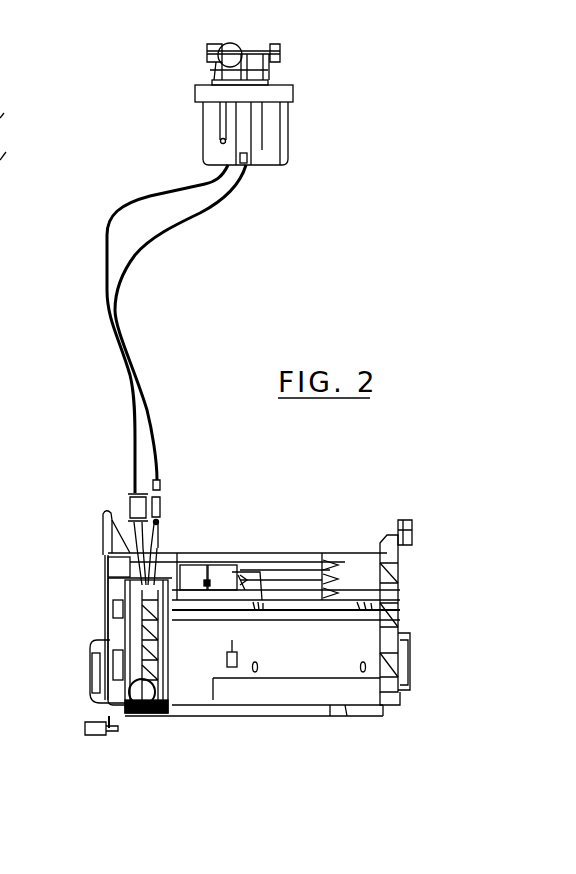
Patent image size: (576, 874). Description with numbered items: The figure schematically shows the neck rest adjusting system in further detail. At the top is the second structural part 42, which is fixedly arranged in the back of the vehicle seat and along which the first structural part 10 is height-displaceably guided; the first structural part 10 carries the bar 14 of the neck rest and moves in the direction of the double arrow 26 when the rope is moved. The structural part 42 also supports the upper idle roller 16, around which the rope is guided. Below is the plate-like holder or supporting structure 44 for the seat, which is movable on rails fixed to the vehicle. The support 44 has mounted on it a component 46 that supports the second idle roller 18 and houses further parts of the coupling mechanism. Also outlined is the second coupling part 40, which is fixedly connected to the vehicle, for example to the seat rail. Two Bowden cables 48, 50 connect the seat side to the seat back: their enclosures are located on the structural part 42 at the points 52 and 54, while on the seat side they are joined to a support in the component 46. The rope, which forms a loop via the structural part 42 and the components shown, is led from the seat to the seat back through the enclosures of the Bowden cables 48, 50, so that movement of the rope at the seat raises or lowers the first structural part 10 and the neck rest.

The first structural part 10 is at (300, 88).
The bar 14 is at (17, 114).
The idle roller 16 is at (230, 50).
The second idle roller 18 is at (142, 704).
The double arrow 26 is at (19, 157).
The second coupling part 40 is at (84, 727).
The second structural part 42 is at (293, 136).
The supporting structure 44 is at (230, 550).
The component 46 is at (118, 644).
The Bowden cable 48 is at (143, 193).
The Bowden cable 50 is at (195, 222).
The enclosure location 52 is at (203, 153).
The enclosure location 54 is at (244, 164).